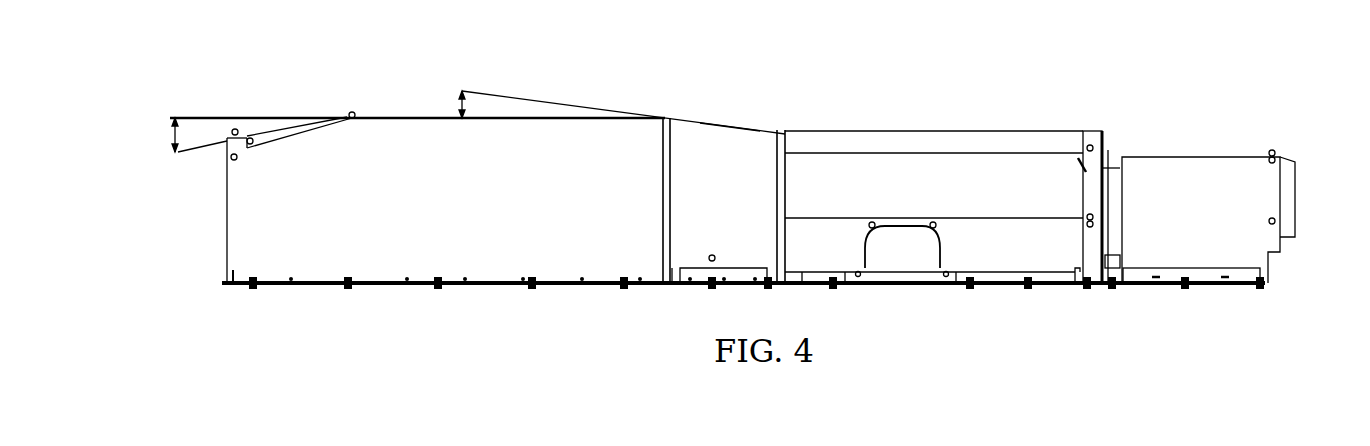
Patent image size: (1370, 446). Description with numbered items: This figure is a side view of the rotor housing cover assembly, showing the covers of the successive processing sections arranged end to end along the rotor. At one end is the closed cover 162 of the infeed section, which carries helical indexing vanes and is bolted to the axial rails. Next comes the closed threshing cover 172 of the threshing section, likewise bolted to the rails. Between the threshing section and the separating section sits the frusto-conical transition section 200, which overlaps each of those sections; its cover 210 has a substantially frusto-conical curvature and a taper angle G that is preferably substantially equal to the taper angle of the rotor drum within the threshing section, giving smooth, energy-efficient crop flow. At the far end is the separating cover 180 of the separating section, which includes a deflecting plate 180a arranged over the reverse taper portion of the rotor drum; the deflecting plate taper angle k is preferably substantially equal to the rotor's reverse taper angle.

The separating cover 180 is at (454, 212).
The deflecting plate 180a is at (273, 133).
The deflecting plate taper angle k is at (176, 136).
The taper angle of the cover G is at (460, 104).
The frusto-conical transition section 200 is at (733, 204).
The cover 210 is at (728, 135).
The closed threshing cover 172 is at (944, 193).
The closed cover 162 is at (1216, 221).